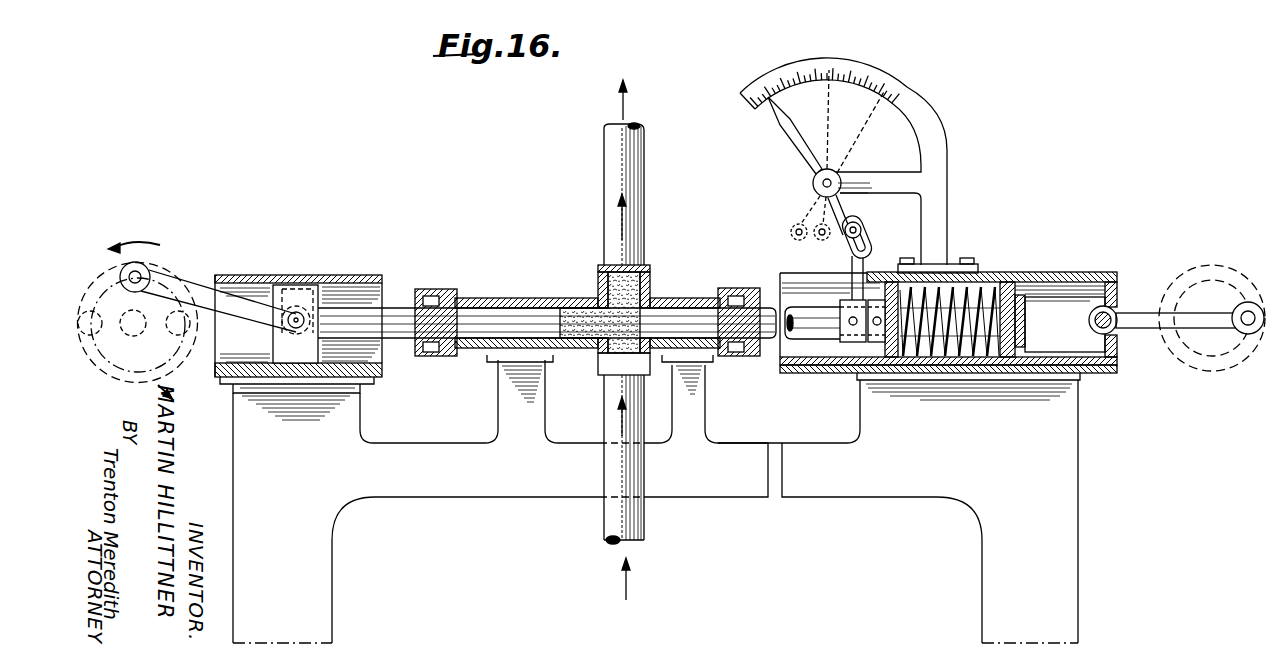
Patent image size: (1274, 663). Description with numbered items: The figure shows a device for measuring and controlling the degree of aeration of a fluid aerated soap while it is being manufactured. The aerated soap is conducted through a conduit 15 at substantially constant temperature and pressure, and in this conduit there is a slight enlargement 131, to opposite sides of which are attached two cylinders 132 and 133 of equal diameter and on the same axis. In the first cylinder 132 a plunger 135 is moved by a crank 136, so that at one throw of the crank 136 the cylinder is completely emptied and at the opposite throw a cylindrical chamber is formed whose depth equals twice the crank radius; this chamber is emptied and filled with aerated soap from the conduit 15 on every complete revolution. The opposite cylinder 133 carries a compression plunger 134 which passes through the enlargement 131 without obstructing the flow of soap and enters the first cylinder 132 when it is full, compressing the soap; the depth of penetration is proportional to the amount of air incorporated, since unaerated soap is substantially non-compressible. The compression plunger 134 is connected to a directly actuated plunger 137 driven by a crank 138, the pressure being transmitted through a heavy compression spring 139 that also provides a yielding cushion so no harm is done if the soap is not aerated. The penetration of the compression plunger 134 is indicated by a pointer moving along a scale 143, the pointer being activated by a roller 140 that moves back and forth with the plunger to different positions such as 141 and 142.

The conduit 15 is at (615, 168).
The enlargement 131 is at (646, 272).
The cylinder 132 is at (597, 312).
The cylinder 133 is at (733, 318).
The compression plunger 134 is at (748, 290).
The plunger 135 is at (493, 315).
The crank 136 is at (150, 272).
The directly actuated plunger 137 is at (1052, 273).
The crank 138 is at (1248, 316).
The compression spring 139 is at (972, 290).
The roller 140 is at (870, 232).
The position 141 is at (827, 230).
The position 142 is at (797, 225).
The scale 143 is at (832, 72).